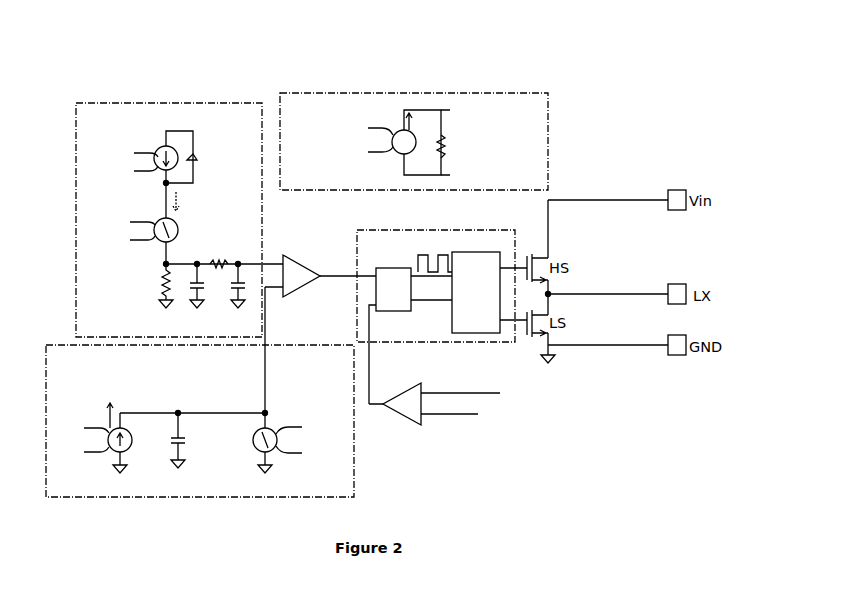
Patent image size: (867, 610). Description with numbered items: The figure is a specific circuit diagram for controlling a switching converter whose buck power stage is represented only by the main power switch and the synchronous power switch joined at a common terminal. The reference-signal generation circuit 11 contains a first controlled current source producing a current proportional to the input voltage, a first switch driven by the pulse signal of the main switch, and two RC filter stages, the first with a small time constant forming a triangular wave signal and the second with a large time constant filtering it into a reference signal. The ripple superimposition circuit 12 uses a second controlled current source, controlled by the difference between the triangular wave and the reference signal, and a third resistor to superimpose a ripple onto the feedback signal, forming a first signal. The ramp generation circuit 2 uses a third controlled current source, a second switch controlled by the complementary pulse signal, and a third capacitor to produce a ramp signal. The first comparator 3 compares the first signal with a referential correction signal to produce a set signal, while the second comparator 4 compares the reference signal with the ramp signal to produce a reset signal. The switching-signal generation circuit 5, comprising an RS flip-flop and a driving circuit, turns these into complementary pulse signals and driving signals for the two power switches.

The reference-signal generation circuit 11 is at (243, 94).
The ripple superimposition circuit 12 is at (550, 142).
The ramp generation circuit 2 is at (337, 345).
The first comparator 3 is at (413, 428).
The second comparator 4 is at (312, 263).
The switching-signal generation circuit 5 is at (465, 228).